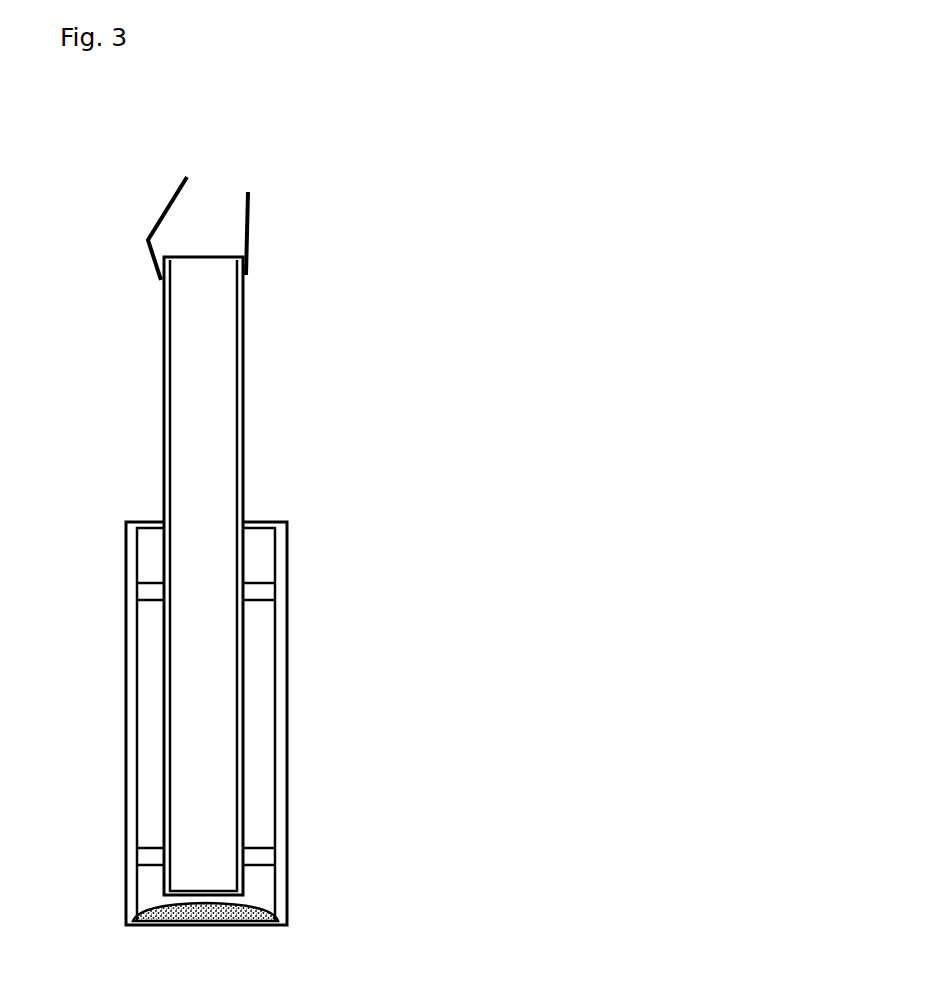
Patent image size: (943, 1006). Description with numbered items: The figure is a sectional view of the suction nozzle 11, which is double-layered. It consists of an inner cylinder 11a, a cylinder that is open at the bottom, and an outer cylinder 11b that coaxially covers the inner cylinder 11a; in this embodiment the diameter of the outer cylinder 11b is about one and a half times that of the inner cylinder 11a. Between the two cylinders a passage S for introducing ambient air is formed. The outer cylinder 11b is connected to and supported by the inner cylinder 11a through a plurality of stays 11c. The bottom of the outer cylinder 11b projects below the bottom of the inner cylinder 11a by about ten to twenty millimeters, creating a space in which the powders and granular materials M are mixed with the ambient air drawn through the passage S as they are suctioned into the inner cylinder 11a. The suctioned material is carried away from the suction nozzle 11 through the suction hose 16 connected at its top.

The suction nozzle 11 is at (532, 427).
The inner cylinder 11a is at (243, 380).
The outer cylinder 11b is at (288, 698).
The stays 11c is at (263, 593).
The suction hose 16 is at (252, 208).
The passage S is at (263, 798).
The powders and granular materials M is at (255, 915).